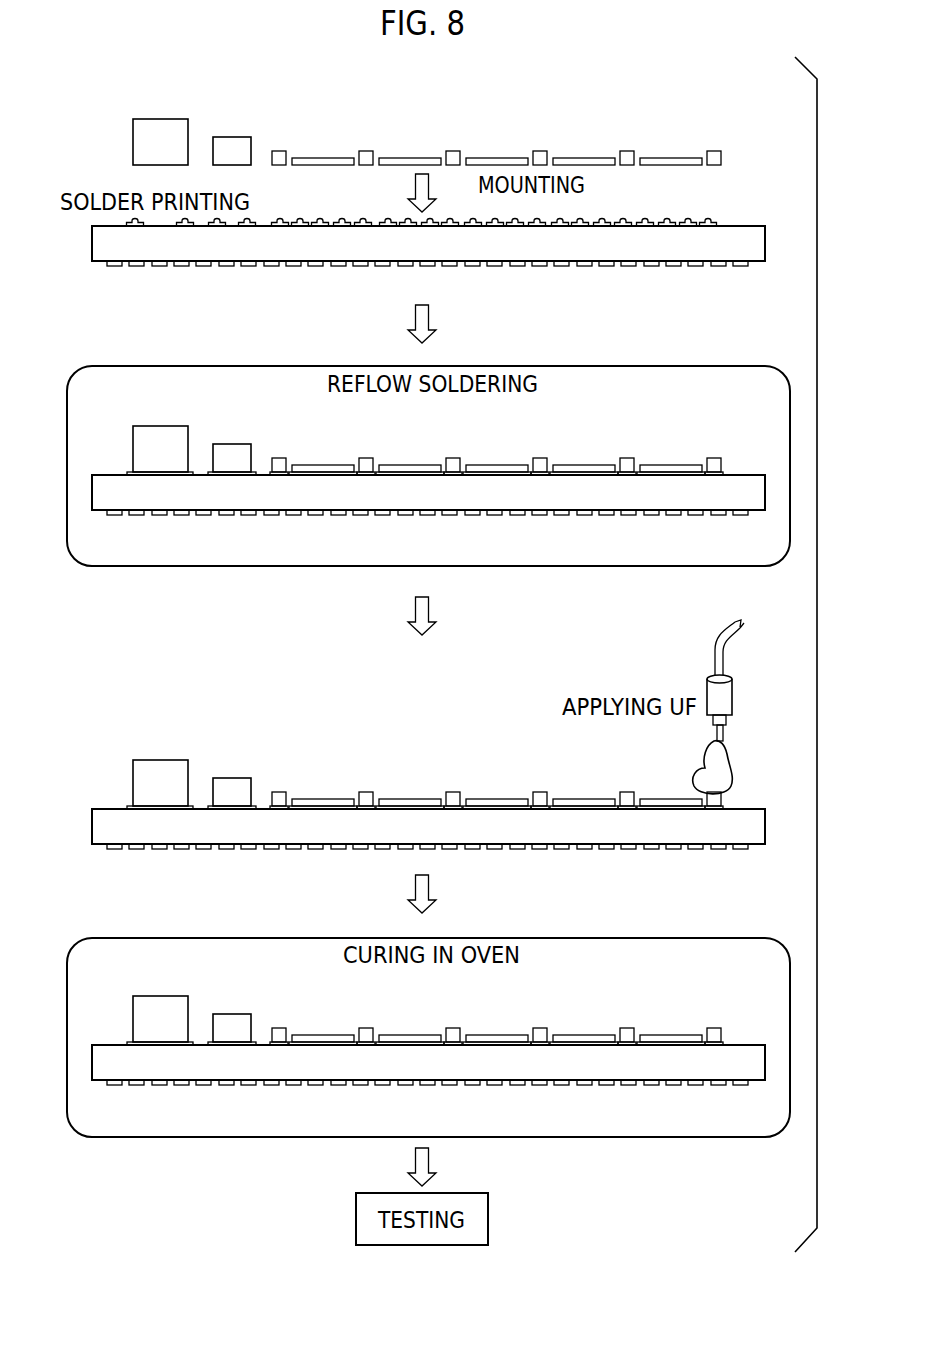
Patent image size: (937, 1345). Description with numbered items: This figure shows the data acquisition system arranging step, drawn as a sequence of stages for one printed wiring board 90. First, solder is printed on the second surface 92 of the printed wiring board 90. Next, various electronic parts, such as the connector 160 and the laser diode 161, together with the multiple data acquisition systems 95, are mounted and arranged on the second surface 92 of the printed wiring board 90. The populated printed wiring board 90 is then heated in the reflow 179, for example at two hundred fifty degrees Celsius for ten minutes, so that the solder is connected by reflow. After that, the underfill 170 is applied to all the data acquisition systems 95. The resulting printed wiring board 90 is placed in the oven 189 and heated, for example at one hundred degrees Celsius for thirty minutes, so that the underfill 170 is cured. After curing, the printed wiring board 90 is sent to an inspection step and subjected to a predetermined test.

The printed wiring board 90 is at (393, 652).
The second surface 92 is at (408, 717).
The data acquisition system 95 is at (497, 567).
The connector 160 is at (157, 130).
The laser diode 161 is at (232, 148).
The underfill 170 is at (726, 775).
The reflow 179 is at (315, 367).
The oven 189 is at (315, 938).